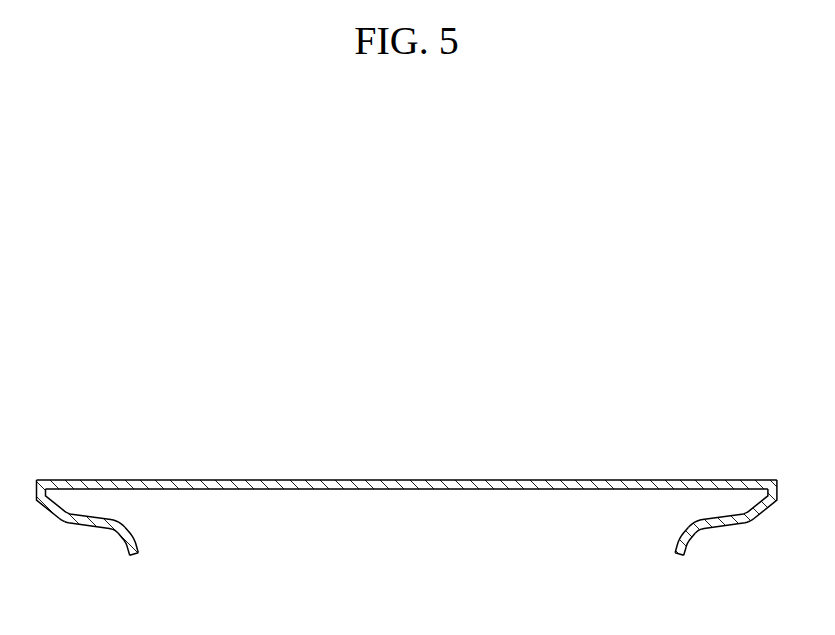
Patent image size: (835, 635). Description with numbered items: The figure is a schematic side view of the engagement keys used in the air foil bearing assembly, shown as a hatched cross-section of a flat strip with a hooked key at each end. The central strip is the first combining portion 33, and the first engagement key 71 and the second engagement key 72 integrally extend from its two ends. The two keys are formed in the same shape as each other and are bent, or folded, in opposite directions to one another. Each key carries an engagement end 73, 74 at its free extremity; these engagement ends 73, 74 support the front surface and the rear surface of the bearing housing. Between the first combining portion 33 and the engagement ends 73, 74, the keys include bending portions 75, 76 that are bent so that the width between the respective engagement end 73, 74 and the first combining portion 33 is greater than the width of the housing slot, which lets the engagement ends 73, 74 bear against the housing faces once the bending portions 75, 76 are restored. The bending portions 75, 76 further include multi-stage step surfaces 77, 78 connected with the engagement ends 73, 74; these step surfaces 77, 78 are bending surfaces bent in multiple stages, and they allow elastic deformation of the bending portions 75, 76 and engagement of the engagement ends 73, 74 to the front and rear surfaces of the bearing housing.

The first combining portion 33 is at (403, 489).
The first engagement key 71 is at (48, 398).
The second engagement key 72 is at (765, 398).
The engagement end 73 is at (139, 553).
The engagement end 74 is at (674, 553).
The bending portion 75 is at (78, 505).
The bending portion 76 is at (734, 505).
The step surface 77 is at (98, 516).
The step surface 78 is at (725, 513).